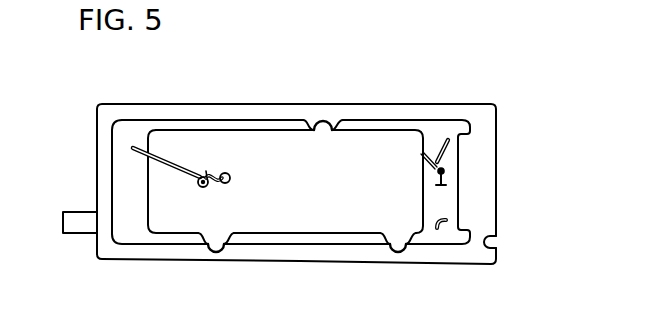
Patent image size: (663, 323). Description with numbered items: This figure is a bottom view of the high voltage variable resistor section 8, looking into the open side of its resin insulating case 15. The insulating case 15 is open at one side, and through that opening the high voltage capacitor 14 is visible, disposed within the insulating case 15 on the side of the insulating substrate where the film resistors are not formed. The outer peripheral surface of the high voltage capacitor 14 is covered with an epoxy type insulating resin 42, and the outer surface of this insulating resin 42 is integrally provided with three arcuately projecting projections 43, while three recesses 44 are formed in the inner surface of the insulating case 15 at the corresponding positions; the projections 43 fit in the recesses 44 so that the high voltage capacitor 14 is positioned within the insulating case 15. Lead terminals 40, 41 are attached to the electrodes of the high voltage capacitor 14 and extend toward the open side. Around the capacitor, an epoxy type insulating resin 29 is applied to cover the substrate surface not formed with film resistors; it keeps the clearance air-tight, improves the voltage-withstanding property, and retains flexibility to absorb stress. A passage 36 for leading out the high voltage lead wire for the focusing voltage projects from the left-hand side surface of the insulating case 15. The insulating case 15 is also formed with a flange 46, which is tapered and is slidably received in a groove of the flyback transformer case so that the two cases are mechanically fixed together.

The high voltage variable resistor section 8 is at (508, 121).
The high voltage capacitor 14 is at (145, 214).
The insulating case 15 is at (102, 104).
The insulating resin 29 is at (123, 175).
The passage 36 is at (86, 228).
The lead terminal 40 is at (424, 151).
The lead terminal 41 is at (240, 167).
The insulating resin 42 is at (292, 225).
The projections 43 is at (340, 124).
The recesses 44 is at (322, 122).
The flange 46 is at (177, 110).